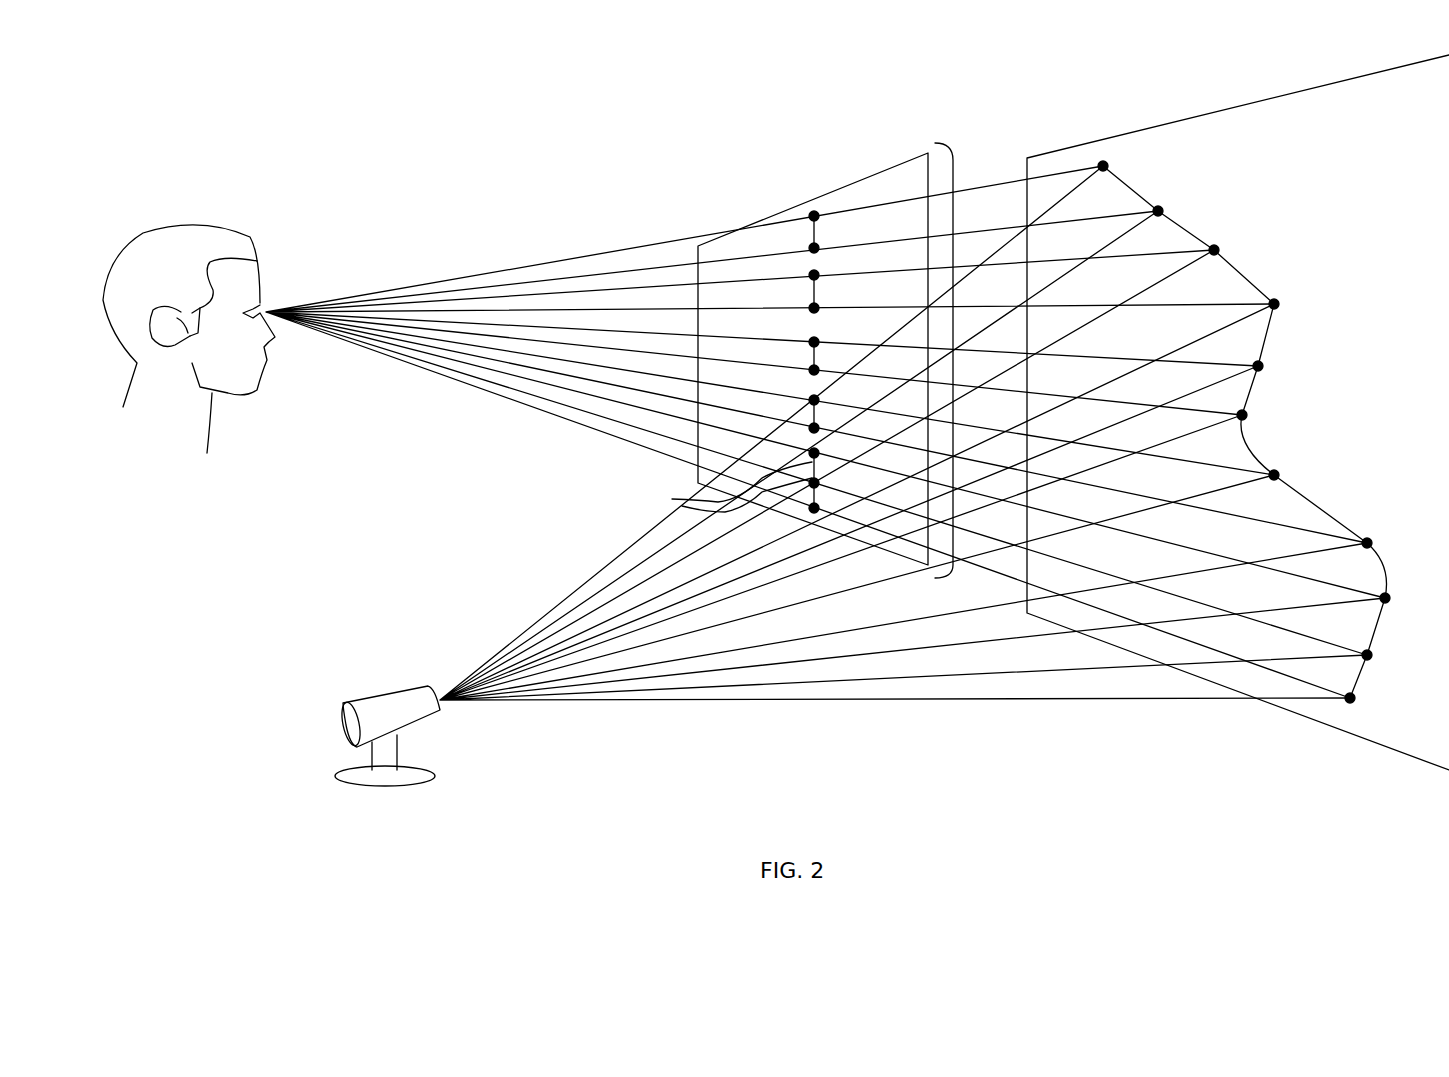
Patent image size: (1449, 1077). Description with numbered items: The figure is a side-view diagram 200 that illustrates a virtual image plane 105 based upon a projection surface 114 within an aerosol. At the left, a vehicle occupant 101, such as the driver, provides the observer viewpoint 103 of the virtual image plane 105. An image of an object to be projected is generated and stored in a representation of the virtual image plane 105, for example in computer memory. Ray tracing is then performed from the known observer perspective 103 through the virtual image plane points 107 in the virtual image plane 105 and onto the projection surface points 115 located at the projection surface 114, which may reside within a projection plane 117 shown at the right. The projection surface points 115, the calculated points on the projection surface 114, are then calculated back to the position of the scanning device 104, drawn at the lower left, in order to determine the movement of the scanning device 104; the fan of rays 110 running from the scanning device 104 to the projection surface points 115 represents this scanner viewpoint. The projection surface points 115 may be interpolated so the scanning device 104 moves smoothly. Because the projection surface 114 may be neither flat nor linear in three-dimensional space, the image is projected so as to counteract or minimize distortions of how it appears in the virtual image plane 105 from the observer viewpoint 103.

The diagram 200 is at (168, 95).
The vehicle occupant 101 is at (180, 222).
The observer viewpoint 103 is at (615, 448).
The scanning device 104 is at (385, 688).
The virtual image plane 105 is at (956, 168).
The virtual image plane points 107 is at (814, 210).
The projected light rays 110 is at (657, 517).
The projection surface 114 is at (1334, 522).
The projection surface points 115 is at (1107, 163).
The projection plane 117 is at (1228, 108).